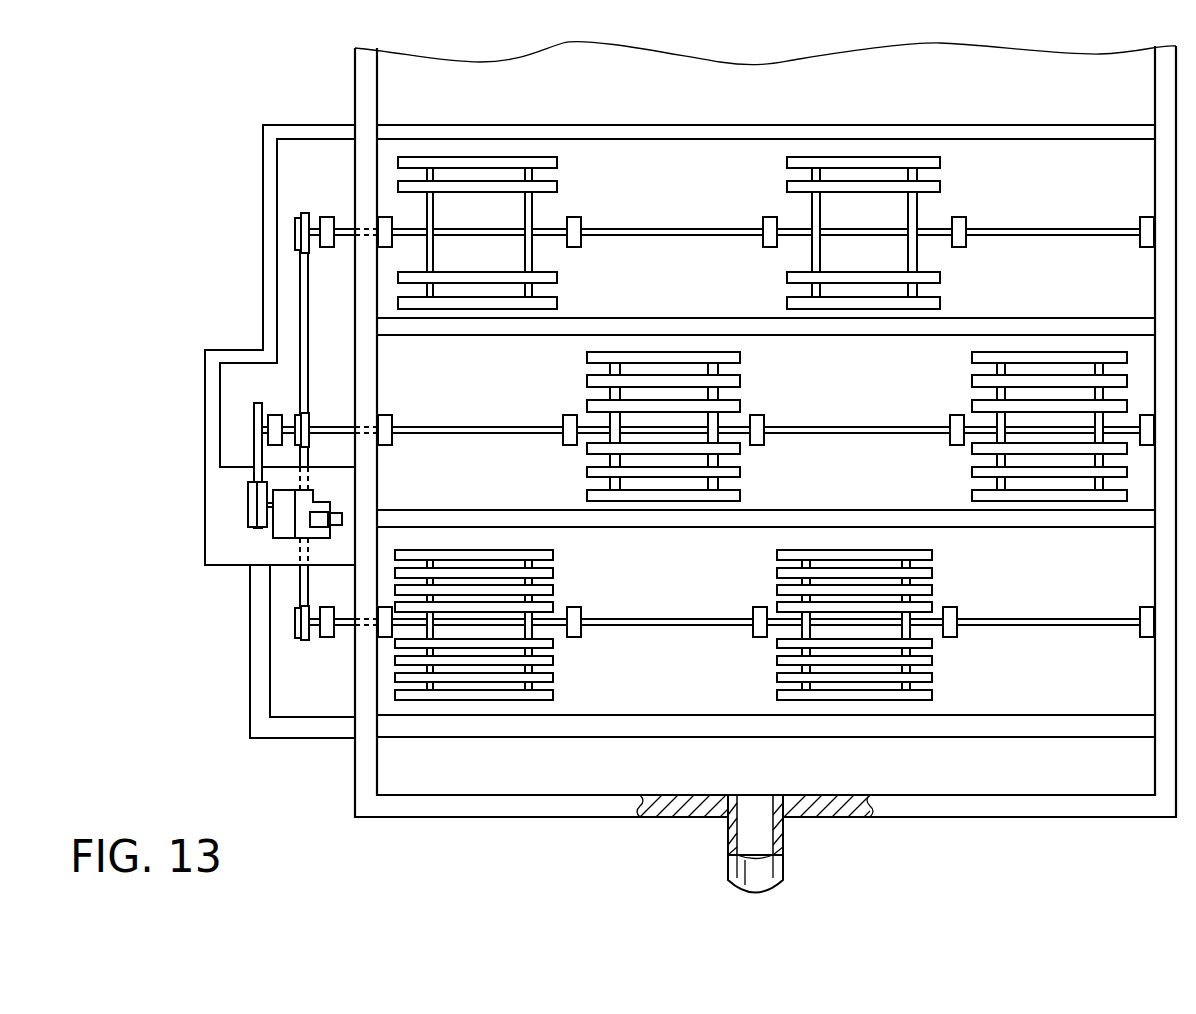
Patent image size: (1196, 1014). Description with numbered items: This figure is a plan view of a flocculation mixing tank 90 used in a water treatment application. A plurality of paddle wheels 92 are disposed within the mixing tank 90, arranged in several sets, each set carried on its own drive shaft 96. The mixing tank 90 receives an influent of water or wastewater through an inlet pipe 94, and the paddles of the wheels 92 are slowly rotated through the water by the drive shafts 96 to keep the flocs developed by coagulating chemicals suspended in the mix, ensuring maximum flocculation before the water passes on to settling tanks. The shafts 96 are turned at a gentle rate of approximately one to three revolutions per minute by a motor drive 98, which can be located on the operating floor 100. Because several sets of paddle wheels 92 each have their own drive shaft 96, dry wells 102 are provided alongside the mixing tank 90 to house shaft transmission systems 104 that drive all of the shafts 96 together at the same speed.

The flocculation mixing tank 90 is at (278, 80).
The paddle wheels 92 is at (749, 193).
The inlet pipe 94 is at (790, 850).
The drive shafts 96 is at (1003, 226).
The motor drive 98 is at (258, 552).
The operating floor 100 is at (213, 520).
The dry wells 102 is at (300, 165).
The shaft transmission systems 104 is at (290, 298).